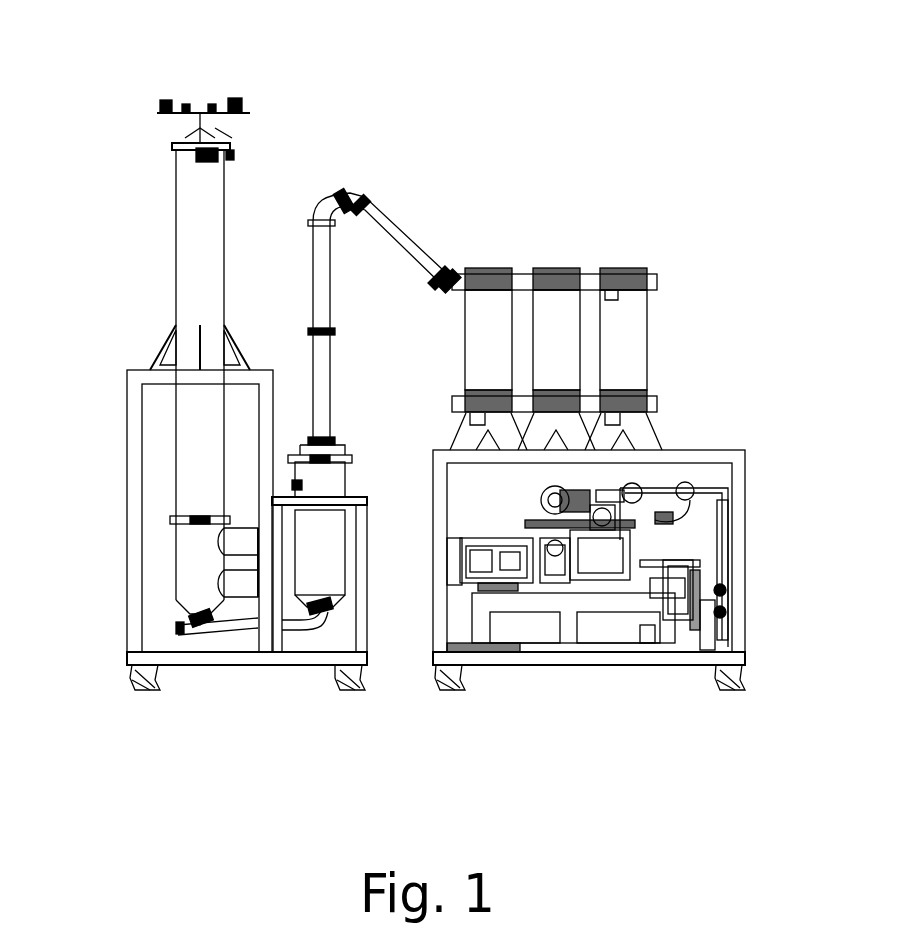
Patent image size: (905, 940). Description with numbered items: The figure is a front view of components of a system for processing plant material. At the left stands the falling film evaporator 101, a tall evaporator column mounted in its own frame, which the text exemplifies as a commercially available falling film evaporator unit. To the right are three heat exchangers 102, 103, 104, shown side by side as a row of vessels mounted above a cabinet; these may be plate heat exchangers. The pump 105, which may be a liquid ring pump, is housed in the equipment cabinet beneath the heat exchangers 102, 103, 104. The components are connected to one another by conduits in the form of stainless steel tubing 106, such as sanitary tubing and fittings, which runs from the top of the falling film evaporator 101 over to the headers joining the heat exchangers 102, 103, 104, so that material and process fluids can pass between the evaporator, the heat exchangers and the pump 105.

The falling film evaporator 101 is at (154, 197).
The heat exchanger 102 is at (483, 255).
The heat exchanger 103 is at (562, 255).
The heat exchanger 104 is at (642, 255).
The pump 105 is at (504, 607).
The stainless steel tubing 106 is at (356, 193).